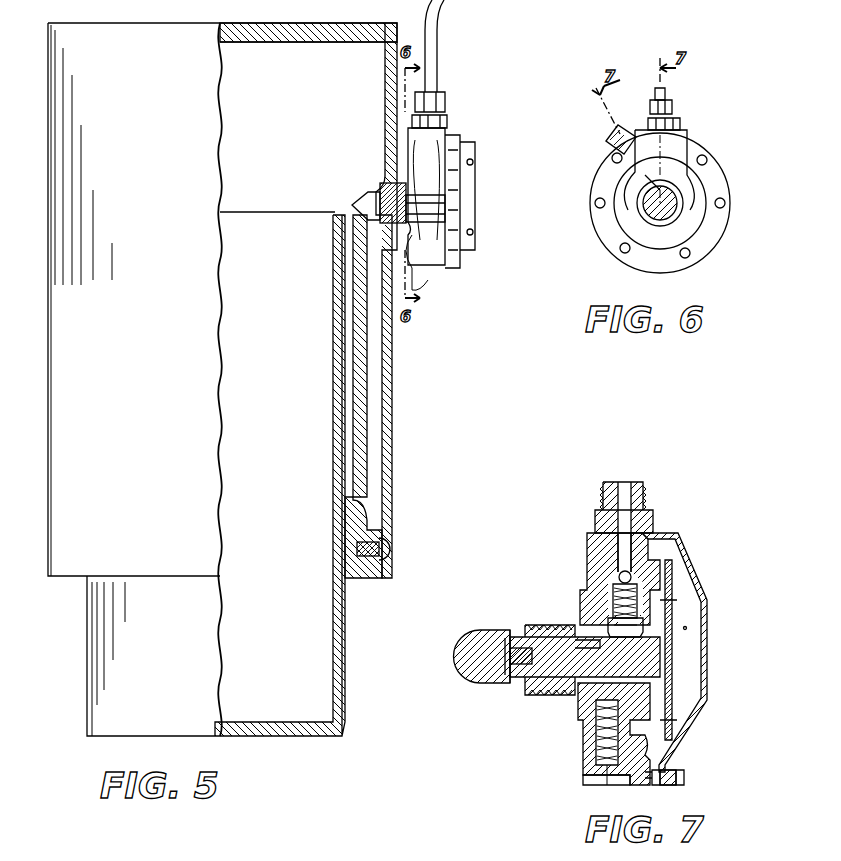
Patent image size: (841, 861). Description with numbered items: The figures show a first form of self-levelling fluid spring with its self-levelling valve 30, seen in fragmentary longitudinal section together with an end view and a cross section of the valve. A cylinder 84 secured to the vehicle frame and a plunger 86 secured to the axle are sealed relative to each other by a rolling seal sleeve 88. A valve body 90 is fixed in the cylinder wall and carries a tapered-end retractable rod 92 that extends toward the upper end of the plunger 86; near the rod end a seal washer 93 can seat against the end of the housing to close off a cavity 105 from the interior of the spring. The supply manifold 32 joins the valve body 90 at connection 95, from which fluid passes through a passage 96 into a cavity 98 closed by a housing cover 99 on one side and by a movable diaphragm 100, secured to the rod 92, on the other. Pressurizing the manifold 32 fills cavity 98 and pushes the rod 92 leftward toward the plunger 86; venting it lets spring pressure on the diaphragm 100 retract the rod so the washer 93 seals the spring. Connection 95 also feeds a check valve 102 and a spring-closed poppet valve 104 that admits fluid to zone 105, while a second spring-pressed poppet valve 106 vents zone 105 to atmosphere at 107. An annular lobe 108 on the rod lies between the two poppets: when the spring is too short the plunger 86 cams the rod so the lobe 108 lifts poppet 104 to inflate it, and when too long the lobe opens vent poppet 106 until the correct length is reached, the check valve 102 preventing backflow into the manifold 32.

In FIG. 5, the probe assembly 30 is at (356, 641).
In FIG. 5, the supply manifold 32 is at (437, 52).
In FIG. 7, the supply manifold 32 is at (623, 472).
In FIG. 5, the cylinder 84 is at (283, 45).
In FIG. 5, the plunger 86 is at (330, 621).
In FIG. 5, the rolling seal sleeve 88 is at (360, 362).
In FIG. 5, the valve body 90 is at (425, 232).
In FIG. 6, the valve body 90 is at (730, 182).
In FIG. 7, the valve body 90 is at (586, 548).
In FIG. 5, the retractable rod 92 is at (378, 188).
In FIG. 7, the retractable rod 92 is at (480, 637).
In FIG. 7, the seal washer 93 is at (500, 683).
In FIG. 5, the connection 95 is at (447, 118).
In FIG. 6, the connection 95 is at (682, 122).
In FIG. 7, the connection 95 is at (655, 528).
In FIG. 7, the passage 96 is at (672, 548).
In FIG. 7, the cavity 98 is at (690, 626).
In FIG. 7, the housing cover 99 is at (692, 748).
In FIG. 7, the diaphragm 100 is at (674, 690).
In FIG. 7, the check valve 102 is at (618, 577).
In FIG. 7, the poppet valve 104 is at (612, 606).
In FIG. 7, the cavity 105 is at (573, 690).
In FIG. 7, the vent poppet valve 106 is at (596, 725).
In FIG. 6, the atmospheric vent 107 is at (610, 136).
In FIG. 7, the atmospheric vent 107 is at (600, 785).
In FIG. 7, the annular lobe 108 is at (632, 632).